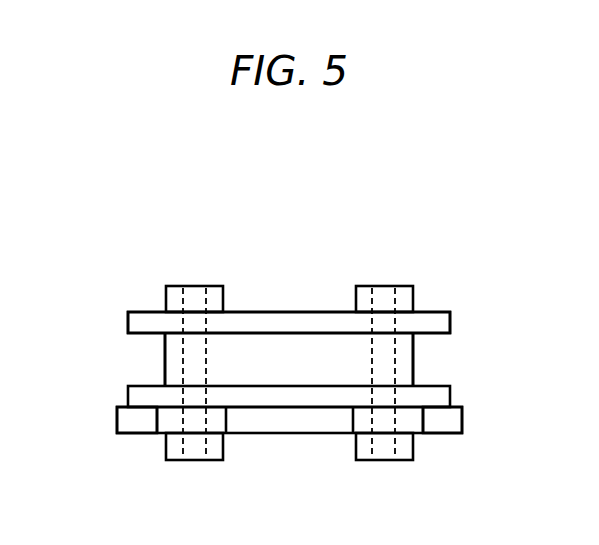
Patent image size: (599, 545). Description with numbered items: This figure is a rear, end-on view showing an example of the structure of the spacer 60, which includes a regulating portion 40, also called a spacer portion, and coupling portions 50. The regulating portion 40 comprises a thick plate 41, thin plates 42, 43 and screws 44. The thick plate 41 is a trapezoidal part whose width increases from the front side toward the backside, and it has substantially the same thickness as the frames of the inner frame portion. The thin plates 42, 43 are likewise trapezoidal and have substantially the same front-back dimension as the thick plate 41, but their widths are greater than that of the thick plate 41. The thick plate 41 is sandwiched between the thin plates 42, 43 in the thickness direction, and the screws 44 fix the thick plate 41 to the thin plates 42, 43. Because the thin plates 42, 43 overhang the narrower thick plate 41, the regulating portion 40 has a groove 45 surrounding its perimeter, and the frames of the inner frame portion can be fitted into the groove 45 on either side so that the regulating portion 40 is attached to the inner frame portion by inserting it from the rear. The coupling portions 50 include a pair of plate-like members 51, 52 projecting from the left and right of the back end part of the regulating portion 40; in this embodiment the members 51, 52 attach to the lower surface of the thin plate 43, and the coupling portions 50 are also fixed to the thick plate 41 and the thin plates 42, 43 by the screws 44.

The spacer 60 is at (222, 214).
The regulating portion 40 is at (106, 322).
The thick plate 41 is at (287, 355).
The thin plate 42 is at (255, 321).
The thin plate 43 is at (323, 398).
The screw 44 is at (172, 297).
The groove 45 is at (147, 360).
The coupling portion 50 is at (106, 418).
The plate-like member 51 is at (442, 422).
The plate-like member 52 is at (138, 423).